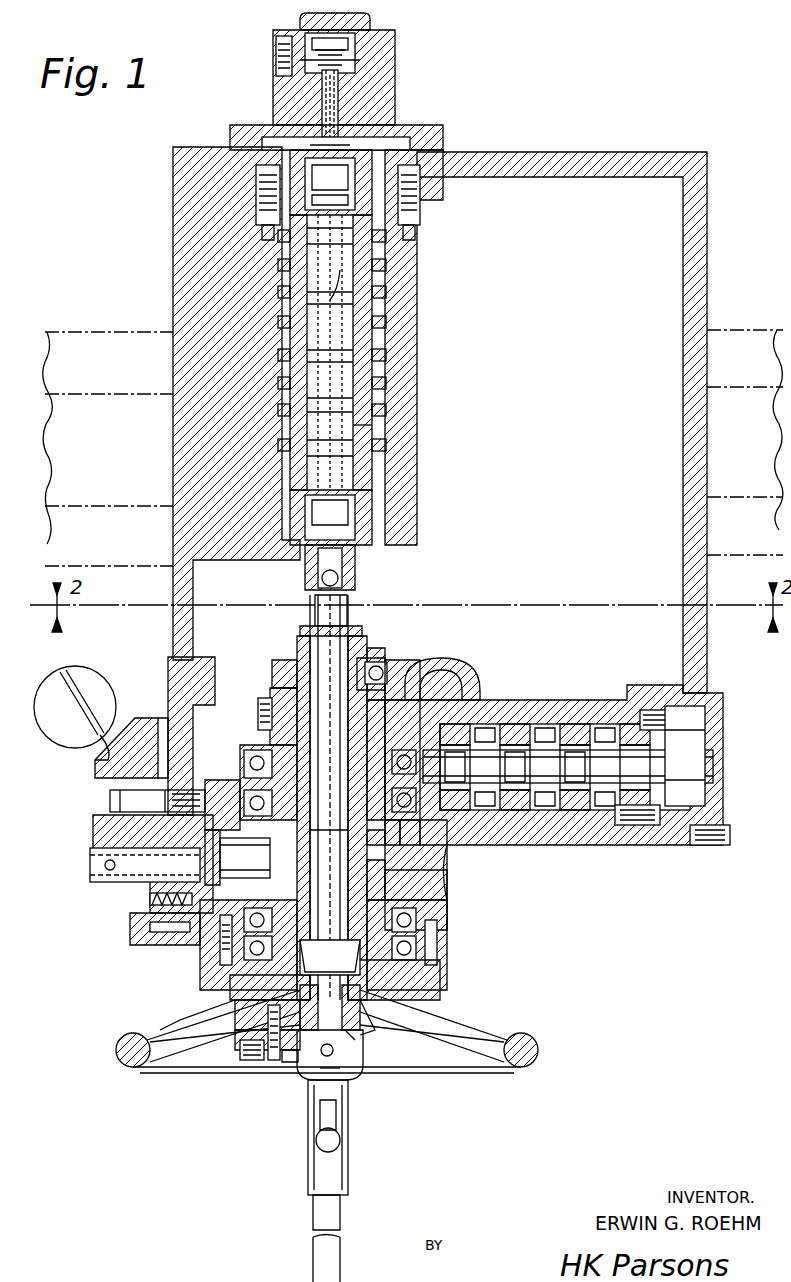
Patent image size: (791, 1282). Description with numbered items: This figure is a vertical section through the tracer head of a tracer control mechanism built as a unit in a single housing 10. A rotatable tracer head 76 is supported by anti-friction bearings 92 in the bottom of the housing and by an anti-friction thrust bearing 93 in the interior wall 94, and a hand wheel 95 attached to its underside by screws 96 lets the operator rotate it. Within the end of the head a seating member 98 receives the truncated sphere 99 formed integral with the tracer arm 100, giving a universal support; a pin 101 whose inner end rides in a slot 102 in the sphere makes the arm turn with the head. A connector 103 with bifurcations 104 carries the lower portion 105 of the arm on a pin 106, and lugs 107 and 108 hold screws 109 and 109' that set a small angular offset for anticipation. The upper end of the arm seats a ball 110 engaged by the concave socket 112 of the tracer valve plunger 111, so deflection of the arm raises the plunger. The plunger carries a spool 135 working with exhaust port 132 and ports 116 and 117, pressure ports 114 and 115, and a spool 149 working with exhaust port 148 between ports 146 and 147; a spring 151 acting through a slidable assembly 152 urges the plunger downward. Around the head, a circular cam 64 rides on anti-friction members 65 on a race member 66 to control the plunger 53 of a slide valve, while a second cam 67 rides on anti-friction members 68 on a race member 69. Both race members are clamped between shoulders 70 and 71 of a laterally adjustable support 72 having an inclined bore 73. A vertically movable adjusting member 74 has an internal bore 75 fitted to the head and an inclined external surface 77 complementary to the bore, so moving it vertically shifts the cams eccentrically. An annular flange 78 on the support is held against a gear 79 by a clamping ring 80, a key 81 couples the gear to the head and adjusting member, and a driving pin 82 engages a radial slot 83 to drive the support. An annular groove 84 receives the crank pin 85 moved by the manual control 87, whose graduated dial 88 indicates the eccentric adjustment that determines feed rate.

The housing 10 is at (173, 258).
The spring 151 is at (370, 35).
The slidable assembly 152 is at (395, 70).
The tracer valve plunger 111 is at (335, 145).
The pressure port 115 is at (386, 237).
The port 117 is at (386, 265).
The spool 135 is at (340, 275).
The exhaust port 132 is at (386, 292).
The port 116 is at (386, 322).
The pressure port 114 is at (386, 355).
The port 147 is at (386, 383).
The exhaust port 148 is at (386, 410).
The spool 149 is at (372, 428).
The port 146 is at (386, 445).
The concave socket 112 is at (345, 560).
The ball 110 is at (322, 578).
The tracer arm 100 is at (340, 626).
The inclined external cylindrical surface 77 is at (329, 797).
The internal cylindrical bore 75 is at (244, 802).
The driving pin 82 is at (262, 700).
The laterally adjustable support 72 is at (280, 672).
The key 81 is at (375, 660).
The anti-friction thrust bearing 93 is at (370, 662).
The interior wall 94 is at (400, 665).
The annular flange 78 is at (385, 760).
The race member 66 is at (400, 755).
The gear 79 is at (470, 665).
The clamping ring 80 is at (458, 690).
The anti-friction members 65 is at (450, 700).
The plunger 53 is at (690, 770).
The second cam 67 is at (430, 830).
The anti-friction members 68 is at (410, 833).
The race member 69 is at (395, 838).
The shoulder 70 is at (380, 845).
The annular groove 84 is at (385, 866).
The cylindrical bore 73 is at (405, 870).
The anti-friction bearings 92 is at (440, 940).
The rotatable tracer head 76 is at (190, 968).
The adjusting member 74 is at (250, 852).
The circular cam 64 is at (215, 720).
The radial slot 83 is at (195, 795).
The shoulder 71 is at (210, 790).
The adjusting crank pin 85 is at (190, 858).
The graduated dial 88 is at (125, 720).
The manual control 87 is at (78, 735).
The truncated sphere 99 is at (235, 985).
The pin 101 is at (380, 1000).
The slot 102 is at (330, 957).
The screws 96 is at (235, 1012).
The hand wheel 95 is at (507, 1036).
The seating member 98 is at (355, 1010).
The connector 103 is at (365, 1015).
The bifurcations 104 is at (350, 1035).
The pin 106 is at (300, 1070).
The lower portion of the tracer arm 105 is at (308, 1120).
The lug 107 is at (240, 1048).
The lug 108 is at (250, 1052).
The screw 109 is at (224, 1076).
The screw 109' is at (241, 1110).